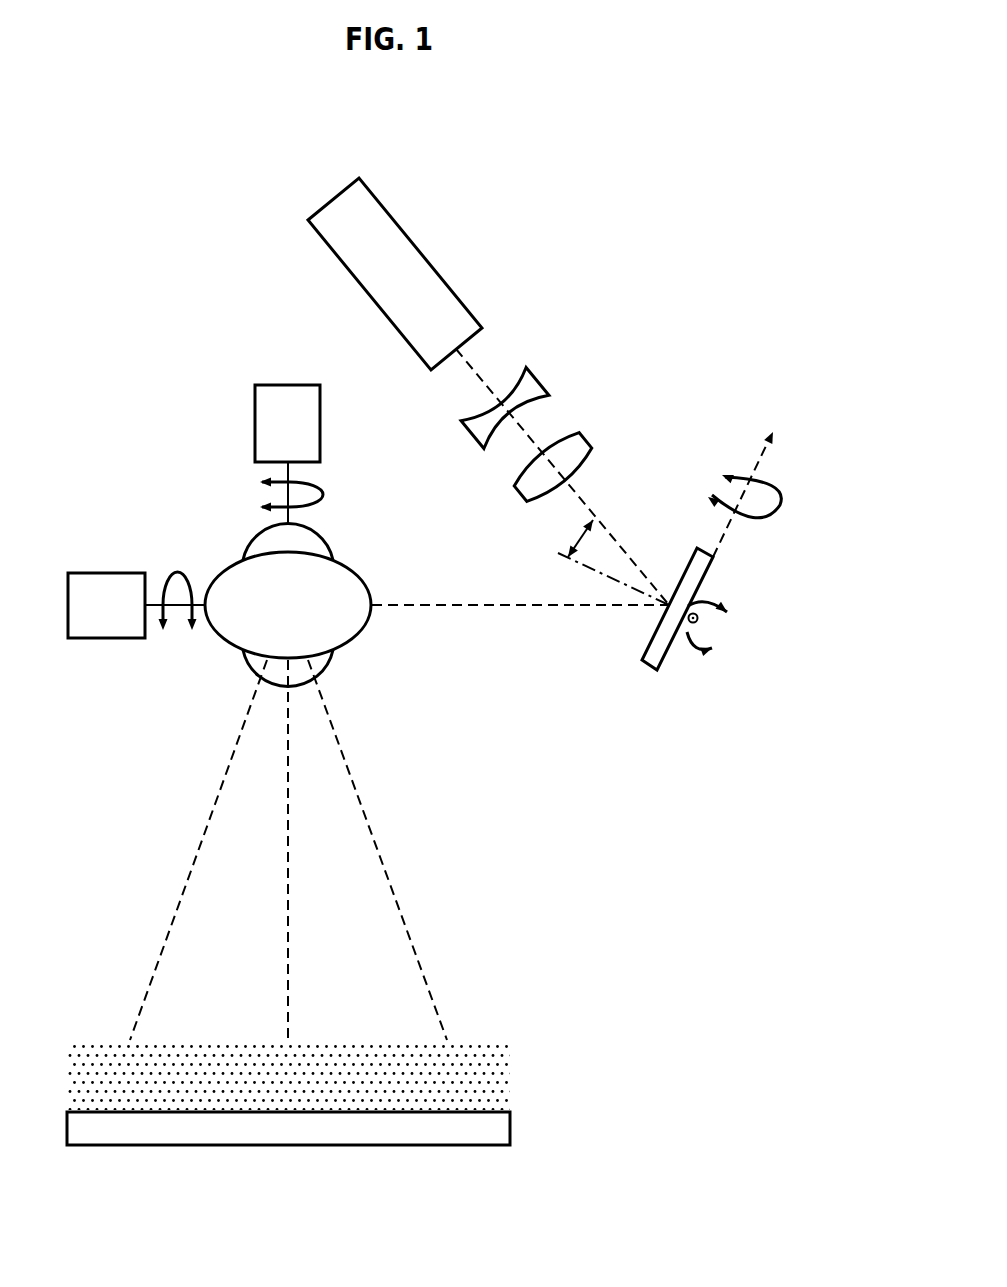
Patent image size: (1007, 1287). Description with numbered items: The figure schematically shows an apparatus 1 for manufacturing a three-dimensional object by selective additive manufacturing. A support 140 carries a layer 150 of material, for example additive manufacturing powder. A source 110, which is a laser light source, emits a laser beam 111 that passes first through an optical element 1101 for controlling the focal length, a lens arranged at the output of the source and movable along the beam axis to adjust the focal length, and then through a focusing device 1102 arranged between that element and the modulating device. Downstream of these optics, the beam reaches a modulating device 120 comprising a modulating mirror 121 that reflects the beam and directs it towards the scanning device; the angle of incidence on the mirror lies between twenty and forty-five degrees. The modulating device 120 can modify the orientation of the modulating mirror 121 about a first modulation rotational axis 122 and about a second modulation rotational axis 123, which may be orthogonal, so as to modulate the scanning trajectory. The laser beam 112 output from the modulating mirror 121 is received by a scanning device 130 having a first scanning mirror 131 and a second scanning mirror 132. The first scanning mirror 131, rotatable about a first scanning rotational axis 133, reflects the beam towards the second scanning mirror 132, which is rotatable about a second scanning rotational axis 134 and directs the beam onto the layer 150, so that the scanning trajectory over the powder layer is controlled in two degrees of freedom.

The apparatus 1 is at (660, 330).
The source 110 is at (431, 250).
The optical element for controlling the focal length 1101 is at (545, 374).
The focusing device 1102 is at (595, 432).
The laser beam 111 is at (586, 506).
The laser beam 112 is at (482, 604).
The modulating device 120 is at (736, 567).
The modulating mirror 121 is at (672, 576).
The first modulation rotational axis 122 is at (757, 472).
The second modulation rotational axis 123 is at (700, 618).
The scanning device 130 is at (250, 537).
The first scanning mirror 131 is at (322, 534).
The second scanning mirror 132 is at (365, 641).
The first scanning rotational axis 133 is at (290, 497).
The second scanning rotational axis 134 is at (178, 605).
The support 140 is at (305, 1141).
The layer 150 is at (305, 1091).